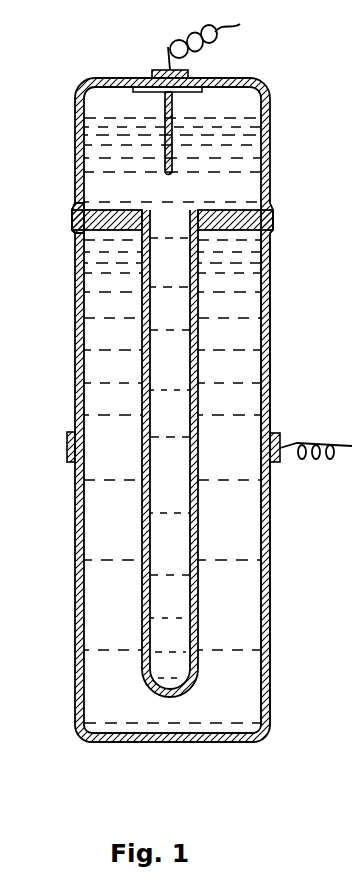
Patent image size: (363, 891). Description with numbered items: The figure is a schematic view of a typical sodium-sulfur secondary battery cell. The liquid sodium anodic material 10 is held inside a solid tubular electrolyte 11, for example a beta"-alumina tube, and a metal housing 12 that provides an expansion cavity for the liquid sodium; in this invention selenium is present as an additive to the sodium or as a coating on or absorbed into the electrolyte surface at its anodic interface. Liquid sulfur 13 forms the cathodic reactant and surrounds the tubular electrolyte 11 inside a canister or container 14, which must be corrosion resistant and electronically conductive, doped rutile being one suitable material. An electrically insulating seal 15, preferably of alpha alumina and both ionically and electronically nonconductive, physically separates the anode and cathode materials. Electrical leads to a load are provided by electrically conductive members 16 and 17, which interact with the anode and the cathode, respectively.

The liquid sodium anodic material 10 is at (248, 137).
The solid tubular electrolyte 11 is at (198, 308).
The metal housing 12 is at (73, 213).
The liquid sulfur 13 is at (222, 415).
The canister or container 14 is at (270, 413).
The electrically insulating seal 15 is at (274, 213).
The electrically conductive member 16 is at (178, 108).
The electrically conductive member 17 is at (297, 443).